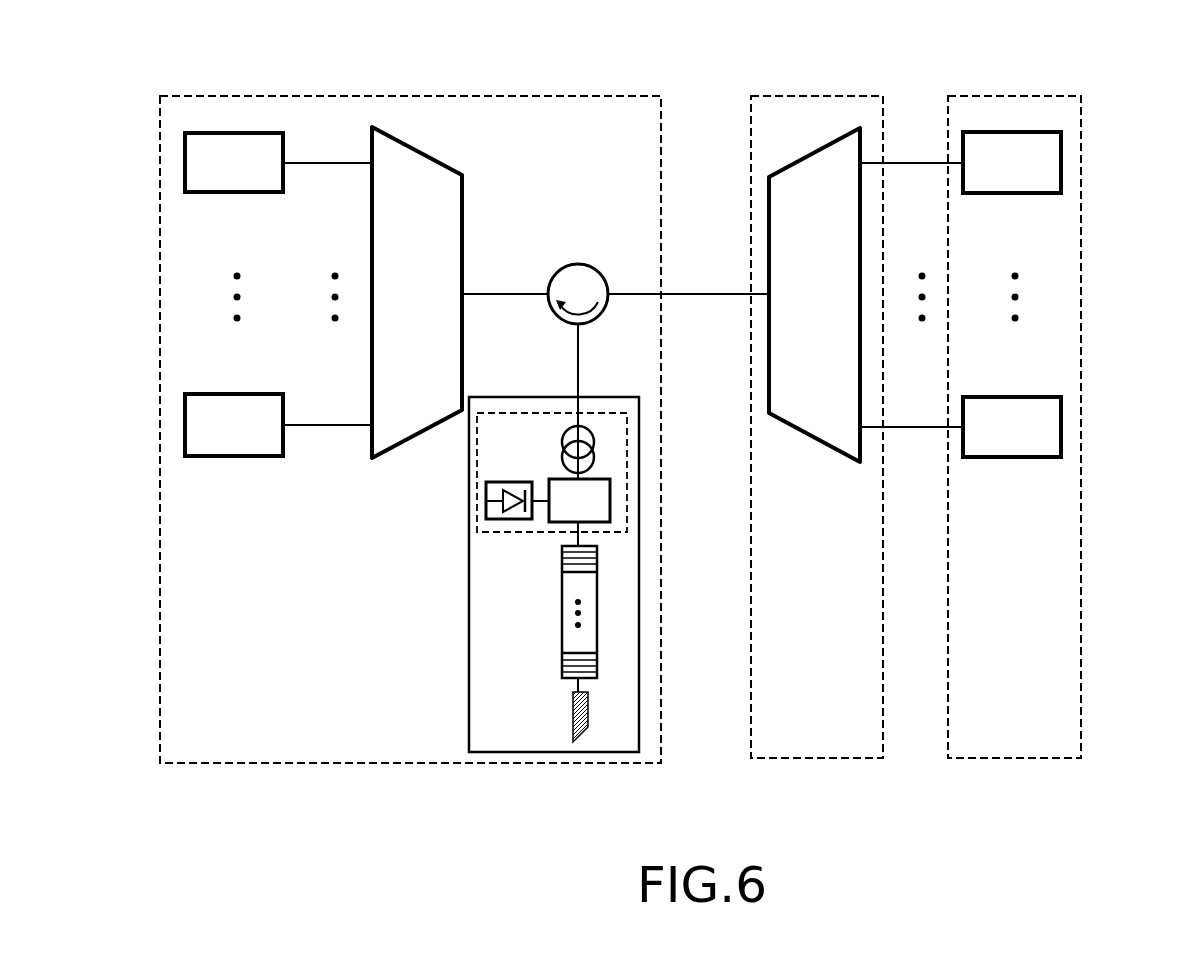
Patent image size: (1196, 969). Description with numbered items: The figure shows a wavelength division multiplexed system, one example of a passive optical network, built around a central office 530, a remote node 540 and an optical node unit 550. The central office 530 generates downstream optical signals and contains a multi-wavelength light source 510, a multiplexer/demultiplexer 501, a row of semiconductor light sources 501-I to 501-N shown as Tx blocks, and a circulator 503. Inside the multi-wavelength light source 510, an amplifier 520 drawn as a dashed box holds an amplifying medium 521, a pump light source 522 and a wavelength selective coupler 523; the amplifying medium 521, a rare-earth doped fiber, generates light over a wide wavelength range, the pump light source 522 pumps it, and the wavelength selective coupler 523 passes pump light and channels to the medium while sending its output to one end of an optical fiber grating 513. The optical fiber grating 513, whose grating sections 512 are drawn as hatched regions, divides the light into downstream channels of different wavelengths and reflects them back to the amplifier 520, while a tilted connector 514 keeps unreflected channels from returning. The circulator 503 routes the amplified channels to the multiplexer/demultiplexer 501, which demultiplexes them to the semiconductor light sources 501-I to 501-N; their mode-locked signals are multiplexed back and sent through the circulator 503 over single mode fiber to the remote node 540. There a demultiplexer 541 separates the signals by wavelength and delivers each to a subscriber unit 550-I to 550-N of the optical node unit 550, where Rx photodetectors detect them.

The central office 530 is at (383, 84).
The remote node 540 is at (806, 88).
The optical node unit 550 is at (1003, 82).
The semiconductor light source 501-I is at (236, 133).
The semiconductor light source 501-N is at (237, 458).
The multiplexer/demultiplexer 501 is at (422, 440).
The circulator 503 is at (578, 264).
The demultiplexer 541 is at (819, 440).
The subscriber unit 550-I is at (1061, 163).
The subscriber unit 550-N is at (1061, 427).
The multi-wavelength light source 510 is at (436, 664).
The amplifier 520 is at (640, 489).
The amplifying medium 521 is at (613, 439).
The pump light source 522 is at (510, 482).
The wavelength selective coupler 523 is at (610, 510).
The optical fiber grating 513 is at (597, 612).
The fiber Bragg gratings 512 is at (563, 558).
The tilted connector 514 is at (573, 718).